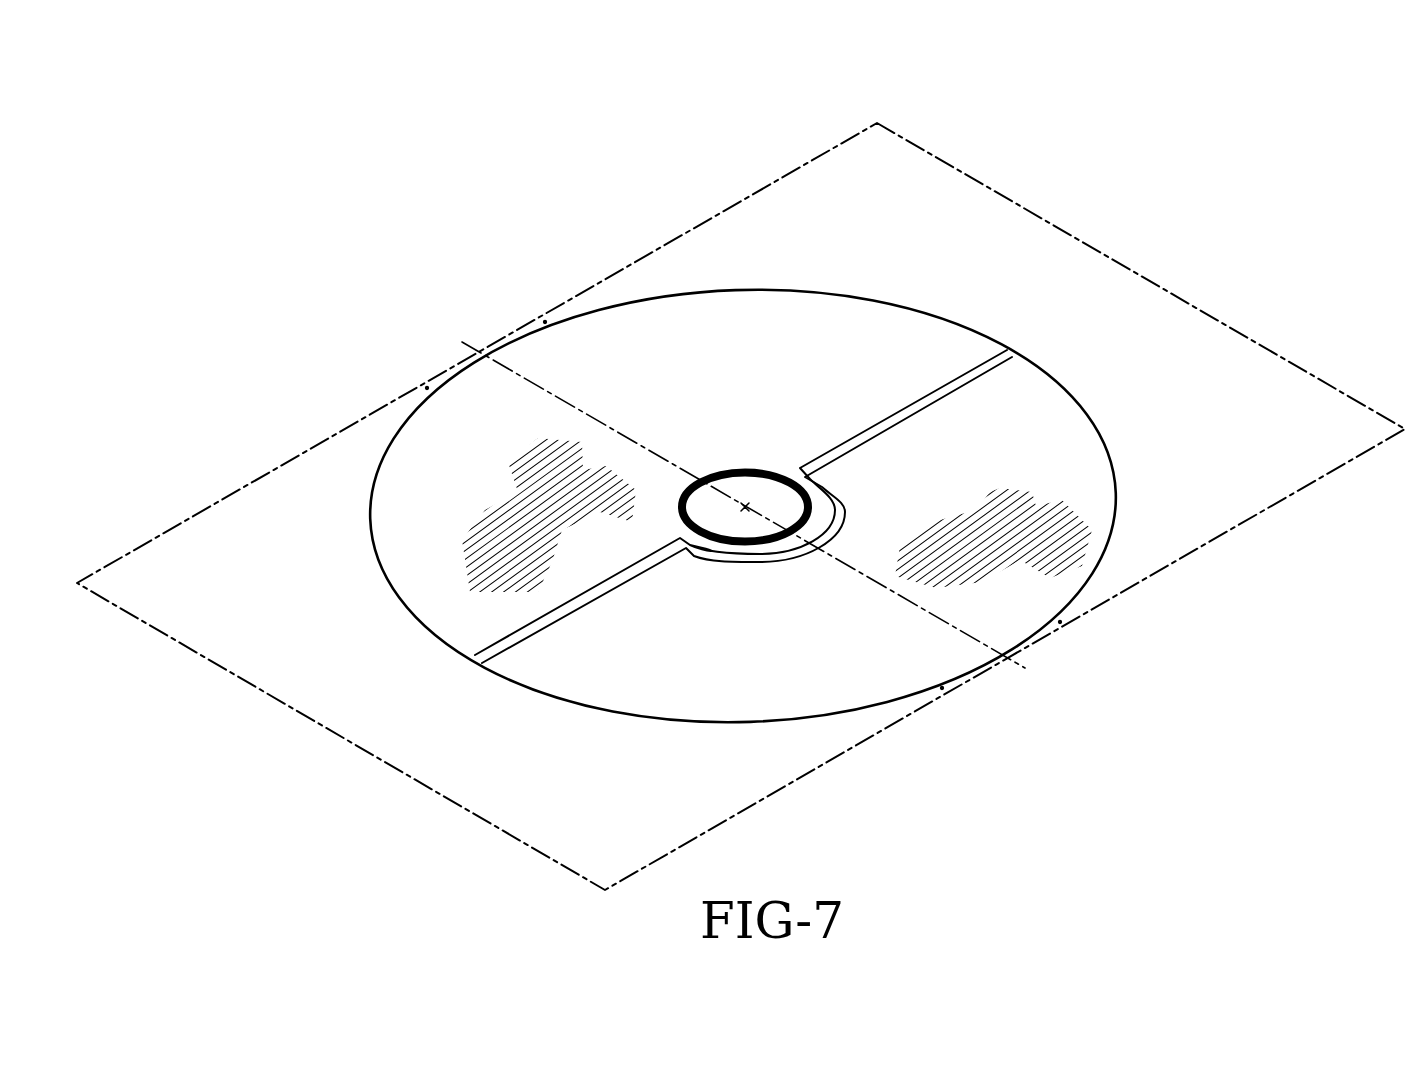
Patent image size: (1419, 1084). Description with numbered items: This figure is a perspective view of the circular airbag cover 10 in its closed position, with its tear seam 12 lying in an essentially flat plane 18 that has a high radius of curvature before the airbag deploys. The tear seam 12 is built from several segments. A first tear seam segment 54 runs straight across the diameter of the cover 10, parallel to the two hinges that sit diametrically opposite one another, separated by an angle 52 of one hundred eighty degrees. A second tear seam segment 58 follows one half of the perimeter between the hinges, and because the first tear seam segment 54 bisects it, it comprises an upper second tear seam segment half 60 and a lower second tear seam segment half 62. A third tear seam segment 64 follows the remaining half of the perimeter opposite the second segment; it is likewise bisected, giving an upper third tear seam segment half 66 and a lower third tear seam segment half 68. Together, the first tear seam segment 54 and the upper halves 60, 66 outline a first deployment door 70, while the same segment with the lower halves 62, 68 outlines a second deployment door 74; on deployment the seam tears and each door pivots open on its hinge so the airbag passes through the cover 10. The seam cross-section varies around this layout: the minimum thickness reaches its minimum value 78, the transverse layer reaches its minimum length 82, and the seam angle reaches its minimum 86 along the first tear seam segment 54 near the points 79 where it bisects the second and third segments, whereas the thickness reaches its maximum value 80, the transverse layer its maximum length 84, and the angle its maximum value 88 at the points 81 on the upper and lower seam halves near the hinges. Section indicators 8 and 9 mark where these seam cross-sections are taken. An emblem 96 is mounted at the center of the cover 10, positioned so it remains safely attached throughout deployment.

The section line 8- 8 is at (838, 448).
The section line 9- 9 is at (768, 338).
The airbag cover 10 is at (272, 237).
The tear seam 12 is at (852, 296).
The plane 18 is at (857, 163).
The angle 52 is at (745, 506).
The first tear seam segment 54 is at (897, 415).
The second tear seam segment 58 is at (1055, 383).
The upper second tear seam segment half 60 is at (793, 292).
The lower second tear seam segment half 62 is at (1108, 455).
The third tear seam segment 64 is at (372, 498).
The upper third tear seam segment half 66 is at (380, 560).
The lower third tear seam segment half 68 is at (743, 722).
The first deployment door 70 is at (718, 325).
The second deployment door 74 is at (1097, 522).
The minimum value of minimum thickness 78 is at (1012, 357).
The point 79 is at (963, 380).
The minimum length of transverse layer 82 is at (482, 663).
The minimum angle 86 is at (538, 628).
The maximum value of minimum thickness 80 is at (545, 322).
The point 81 is at (427, 388).
The maximum length of transverse layer 84 is at (1063, 628).
The maximum value of angle 88 is at (942, 690).
The emblem 96 is at (715, 468).